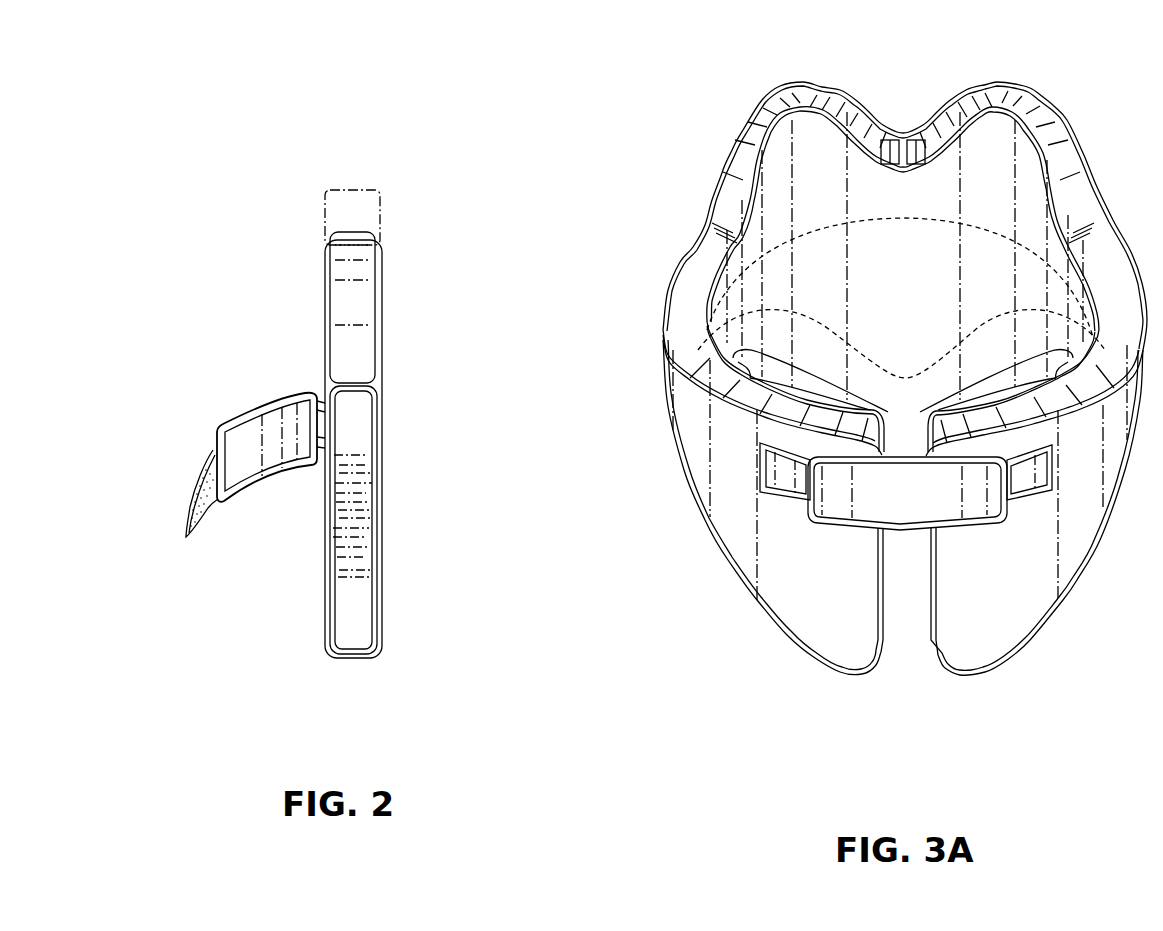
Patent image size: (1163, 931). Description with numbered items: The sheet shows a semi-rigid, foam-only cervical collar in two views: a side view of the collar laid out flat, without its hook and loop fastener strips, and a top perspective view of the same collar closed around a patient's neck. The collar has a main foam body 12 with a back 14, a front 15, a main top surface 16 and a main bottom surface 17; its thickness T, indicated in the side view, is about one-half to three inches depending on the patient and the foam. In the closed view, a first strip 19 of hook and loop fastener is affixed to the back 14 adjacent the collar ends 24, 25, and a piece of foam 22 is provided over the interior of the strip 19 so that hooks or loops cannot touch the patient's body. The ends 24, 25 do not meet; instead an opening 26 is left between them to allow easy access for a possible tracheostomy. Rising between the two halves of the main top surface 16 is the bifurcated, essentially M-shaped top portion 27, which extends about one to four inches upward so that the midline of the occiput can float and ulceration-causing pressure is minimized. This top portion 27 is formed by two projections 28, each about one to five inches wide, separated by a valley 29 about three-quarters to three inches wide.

In FIG. 2, the thickness T is at (350, 190).
In FIG. 3A, the foam body 12 is at (700, 418).
In FIG. 2, the back 14 is at (382, 450).
In FIG. 2, the front 15 is at (328, 560).
In FIG. 3A, the front 15 is at (921, 296).
In FIG. 2, the main top surface 16 is at (357, 386).
In FIG. 3A, the main top surface 16 is at (1103, 267).
In FIG. 2, the main bottom surface 17 is at (355, 657).
In FIG. 3A, the first strip 19 is at (1047, 460).
In FIG. 3A, the piece of foam 22 is at (940, 505).
In FIG. 2, the end 24 is at (364, 436).
In FIG. 3A, the end 24 is at (878, 652).
In FIG. 3A, the end 25 is at (928, 640).
In FIG. 3A, the opening 26 is at (905, 708).
In FIG. 2, the bifurcated top portion 27 is at (293, 301).
In FIG. 3A, the bifurcated top portion 27 is at (740, 96).
In FIG. 3A, the projection 28 is at (1012, 97).
In FIG. 3A, the valley 29 is at (904, 132).